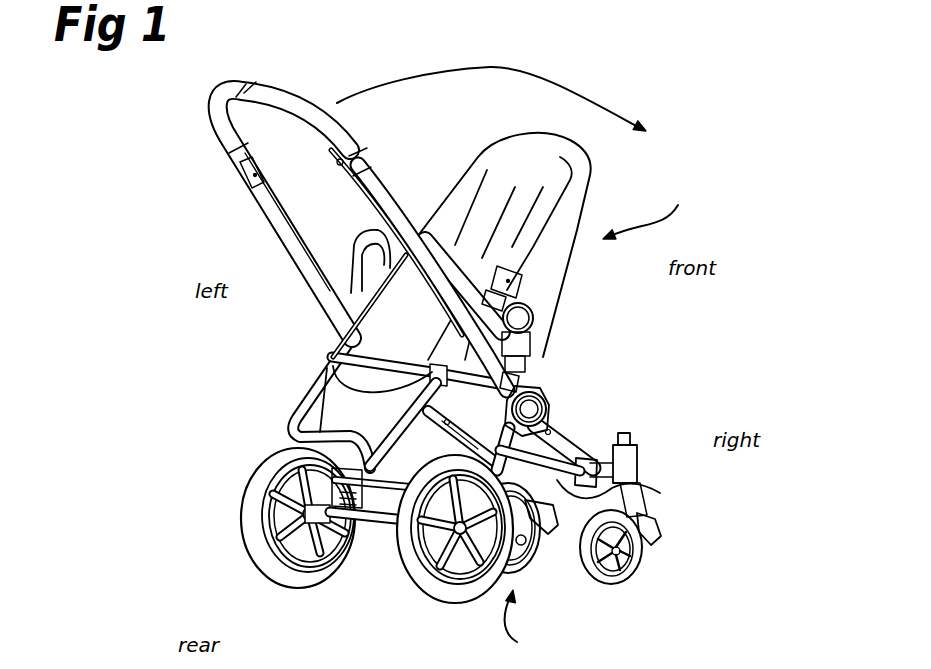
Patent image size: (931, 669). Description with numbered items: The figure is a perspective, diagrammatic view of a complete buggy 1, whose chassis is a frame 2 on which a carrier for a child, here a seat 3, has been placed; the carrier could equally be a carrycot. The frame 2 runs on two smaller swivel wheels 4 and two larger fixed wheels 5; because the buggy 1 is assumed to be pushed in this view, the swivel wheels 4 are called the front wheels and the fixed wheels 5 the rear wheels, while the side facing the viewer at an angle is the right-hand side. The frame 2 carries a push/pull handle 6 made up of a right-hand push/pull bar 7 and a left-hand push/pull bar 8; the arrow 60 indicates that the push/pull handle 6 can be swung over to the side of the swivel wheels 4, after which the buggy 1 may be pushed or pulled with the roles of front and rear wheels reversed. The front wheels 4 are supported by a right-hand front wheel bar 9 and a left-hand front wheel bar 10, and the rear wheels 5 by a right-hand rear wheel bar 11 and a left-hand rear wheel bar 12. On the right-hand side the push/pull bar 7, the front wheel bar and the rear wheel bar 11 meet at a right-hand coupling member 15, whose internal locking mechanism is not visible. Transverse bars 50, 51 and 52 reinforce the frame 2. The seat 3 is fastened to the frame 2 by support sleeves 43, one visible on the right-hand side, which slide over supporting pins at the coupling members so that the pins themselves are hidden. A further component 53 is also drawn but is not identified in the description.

The buggy 1 is at (650, 212).
The frame 2 is at (519, 624).
The seat 3 is at (500, 165).
The swivel wheels 4 is at (593, 534).
The fixed wheels 5 is at (271, 560).
The push/pull handle 6 is at (344, 137).
The right-hand push/pull bar 7 is at (388, 190).
The left-hand push/pull bar 8 is at (277, 212).
The right-hand front wheel bar 9 is at (590, 448).
The left-hand front wheel bar 10 is at (447, 435).
The right-hand rear wheel bar 11 is at (567, 438).
The left-hand rear wheel bar 12 is at (313, 432).
The right-hand coupling member 15 is at (547, 402).
The support sleeve 43 is at (540, 384).
The transverse bar 50 is at (378, 522).
The transverse bar 51 is at (652, 491).
The transverse bar 52 is at (367, 468).
The seat pivot 53 is at (522, 322).
The arrow 60 is at (582, 96).